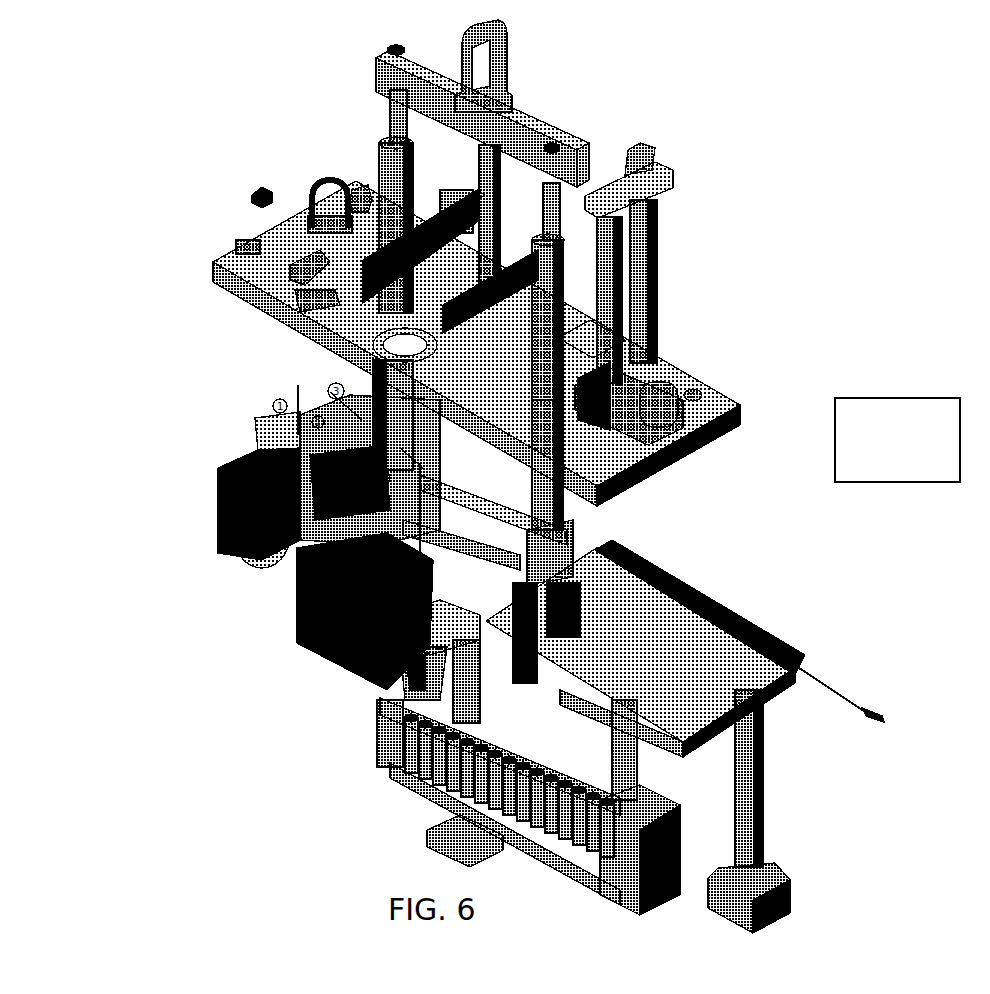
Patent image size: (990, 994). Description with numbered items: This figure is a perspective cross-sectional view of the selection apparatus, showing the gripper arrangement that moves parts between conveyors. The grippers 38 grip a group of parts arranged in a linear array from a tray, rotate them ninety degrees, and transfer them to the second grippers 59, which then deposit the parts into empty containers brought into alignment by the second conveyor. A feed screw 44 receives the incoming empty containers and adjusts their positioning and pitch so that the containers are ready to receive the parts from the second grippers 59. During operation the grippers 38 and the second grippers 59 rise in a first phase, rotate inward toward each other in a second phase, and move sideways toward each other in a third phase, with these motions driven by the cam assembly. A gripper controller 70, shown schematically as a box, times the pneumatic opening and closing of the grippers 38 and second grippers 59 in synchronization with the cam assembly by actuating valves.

The second grippers 59 is at (218, 492).
The feed screw 44 is at (238, 568).
The grippers 38 is at (398, 668).
The gripper controller 70 is at (898, 397).